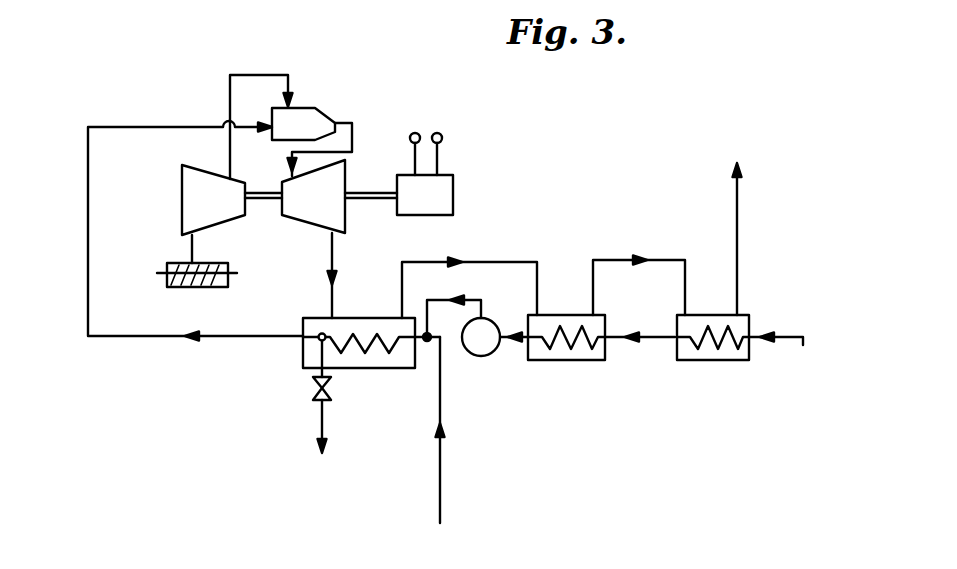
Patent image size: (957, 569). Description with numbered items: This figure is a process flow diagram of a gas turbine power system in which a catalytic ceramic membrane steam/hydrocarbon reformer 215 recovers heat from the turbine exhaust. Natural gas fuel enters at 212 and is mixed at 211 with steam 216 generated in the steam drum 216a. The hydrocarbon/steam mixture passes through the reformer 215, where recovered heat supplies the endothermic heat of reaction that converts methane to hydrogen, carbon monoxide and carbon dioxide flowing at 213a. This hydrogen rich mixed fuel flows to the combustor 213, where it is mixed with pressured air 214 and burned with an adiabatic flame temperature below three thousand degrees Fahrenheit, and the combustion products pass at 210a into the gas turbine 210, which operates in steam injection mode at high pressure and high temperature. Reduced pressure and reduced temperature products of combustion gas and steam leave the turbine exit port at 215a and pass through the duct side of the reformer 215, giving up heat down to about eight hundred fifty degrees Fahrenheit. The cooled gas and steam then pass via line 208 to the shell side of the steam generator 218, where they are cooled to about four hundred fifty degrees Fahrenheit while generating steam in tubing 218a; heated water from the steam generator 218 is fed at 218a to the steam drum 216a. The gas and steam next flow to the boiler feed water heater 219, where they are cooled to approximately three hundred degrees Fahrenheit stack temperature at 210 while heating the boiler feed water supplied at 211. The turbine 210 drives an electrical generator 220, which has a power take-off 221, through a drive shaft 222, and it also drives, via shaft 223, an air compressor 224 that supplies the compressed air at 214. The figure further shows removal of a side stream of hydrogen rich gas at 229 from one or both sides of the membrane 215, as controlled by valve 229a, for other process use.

The line 208 is at (498, 262).
The gas turbine 210 is at (297, 215).
The combustor outlet flow to turbine 210a is at (355, 125).
The mixing point / boiler feed water supply 211 is at (425, 357).
The natural gas fuel inlet 212 is at (440, 493).
The combustor 213 is at (322, 112).
The reformed gas flow 213a is at (105, 338).
The pressured air 214 is at (252, 75).
The catalytic ceramic membrane steam/hydrocarbon reformer 215 is at (370, 316).
The turbine exhaust flow 215a is at (332, 300).
The steam 216 is at (437, 298).
The steam drum 216a is at (481, 357).
The steam generator 218 is at (585, 362).
The tubing / heated water feed 218a is at (507, 330).
The boiler feed water heater 219 is at (710, 360).
The electrical generator 220 is at (453, 180).
The power take-off 221 is at (460, 130).
The drive shaft 222 is at (358, 200).
The shaft 223 is at (262, 190).
The air compressor 224 is at (180, 186).
The hydrogen rich gas side stream 229 is at (317, 412).
The valve 229a is at (312, 388).